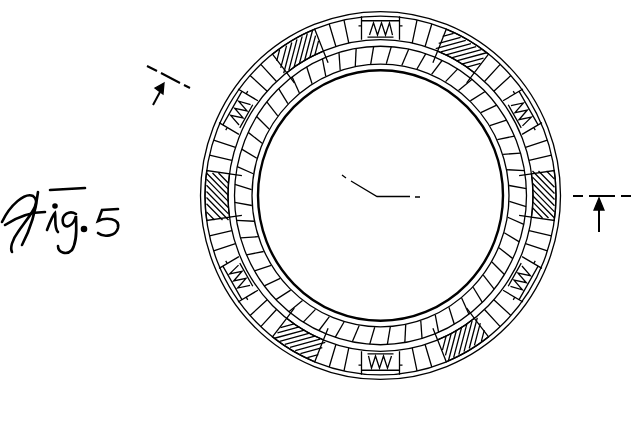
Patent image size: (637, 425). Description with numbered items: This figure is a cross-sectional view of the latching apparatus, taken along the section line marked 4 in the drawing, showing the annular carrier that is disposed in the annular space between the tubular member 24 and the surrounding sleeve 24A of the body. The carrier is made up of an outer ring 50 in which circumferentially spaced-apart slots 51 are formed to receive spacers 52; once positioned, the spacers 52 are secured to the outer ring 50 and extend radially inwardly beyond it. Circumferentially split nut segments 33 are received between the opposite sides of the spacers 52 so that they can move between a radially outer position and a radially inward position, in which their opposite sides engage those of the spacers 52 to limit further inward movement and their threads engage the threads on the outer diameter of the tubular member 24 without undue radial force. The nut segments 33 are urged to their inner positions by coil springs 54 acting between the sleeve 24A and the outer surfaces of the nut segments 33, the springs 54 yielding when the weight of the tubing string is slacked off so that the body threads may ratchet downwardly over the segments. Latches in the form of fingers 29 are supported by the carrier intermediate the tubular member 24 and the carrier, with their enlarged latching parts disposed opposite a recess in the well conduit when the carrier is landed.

The tubular member 24 is at (380, 196).
The sleeve 24A is at (385, 196).
The fingers 29 is at (17, 416).
The nut segments 33 is at (381, 194).
The outer ring 50 is at (380, 226).
The slots 51 is at (381, 272).
The spacers 52 is at (380, 217).
The coil springs 54 is at (381, 220).
The section line 4- 4 is at (385, 168).